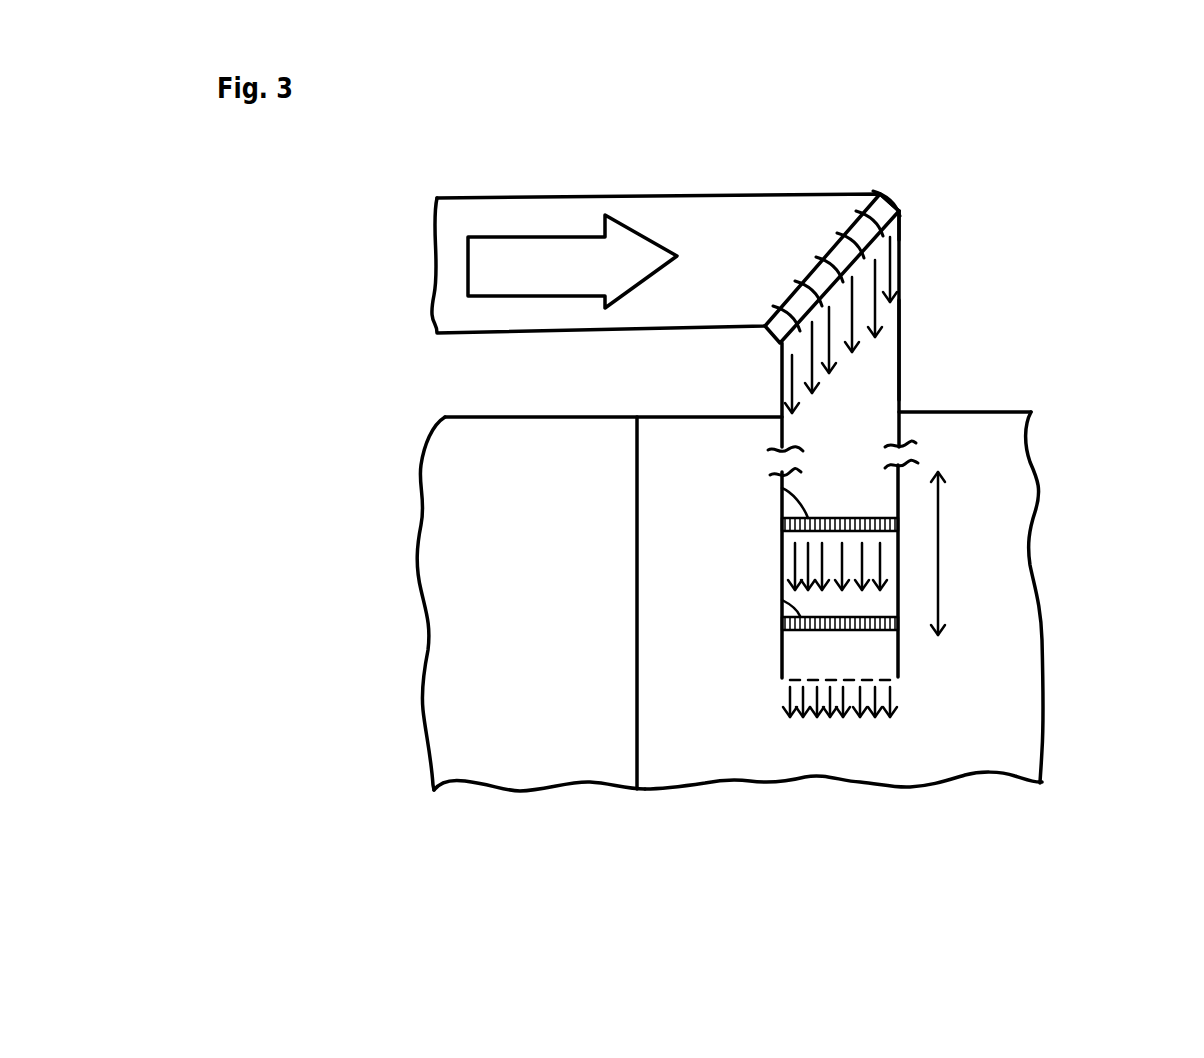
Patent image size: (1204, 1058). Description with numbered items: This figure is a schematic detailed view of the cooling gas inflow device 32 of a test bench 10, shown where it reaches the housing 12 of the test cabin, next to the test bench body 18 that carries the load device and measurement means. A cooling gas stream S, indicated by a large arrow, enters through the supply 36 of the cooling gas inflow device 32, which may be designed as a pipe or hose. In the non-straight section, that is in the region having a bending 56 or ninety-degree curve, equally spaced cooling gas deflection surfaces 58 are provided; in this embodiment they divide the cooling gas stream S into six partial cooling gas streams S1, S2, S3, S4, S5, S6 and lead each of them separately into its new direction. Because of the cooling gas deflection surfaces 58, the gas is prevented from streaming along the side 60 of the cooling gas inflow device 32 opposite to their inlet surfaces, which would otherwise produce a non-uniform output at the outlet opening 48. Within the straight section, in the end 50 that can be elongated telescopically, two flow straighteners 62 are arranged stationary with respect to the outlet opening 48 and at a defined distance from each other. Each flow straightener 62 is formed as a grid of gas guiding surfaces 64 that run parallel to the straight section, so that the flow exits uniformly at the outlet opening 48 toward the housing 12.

The test bench 10 is at (1104, 170).
The housing 12 is at (1017, 505).
The test bench body 18 is at (500, 575).
The cooling gas inflow device 32 is at (828, 168).
The supply 36 is at (678, 196).
The outlet opening 48 is at (805, 678).
The end 50 is at (917, 662).
The bending 56 is at (905, 200).
The cooling gas deflection surfaces 58 is at (899, 218).
The side 60 is at (902, 345).
The flow straightener 62 is at (782, 528).
The gas guiding surfaces 64 is at (782, 488).
The cooling gas stream S is at (528, 258).
The partial cooling gas stream S1 is at (796, 401).
The partial cooling gas stream S2 is at (816, 376).
The partial cooling gas stream S3 is at (834, 357).
The partial cooling gas stream S4 is at (853, 333).
The partial cooling gas stream S5 is at (874, 313).
The partial cooling gas stream S6 is at (889, 287).